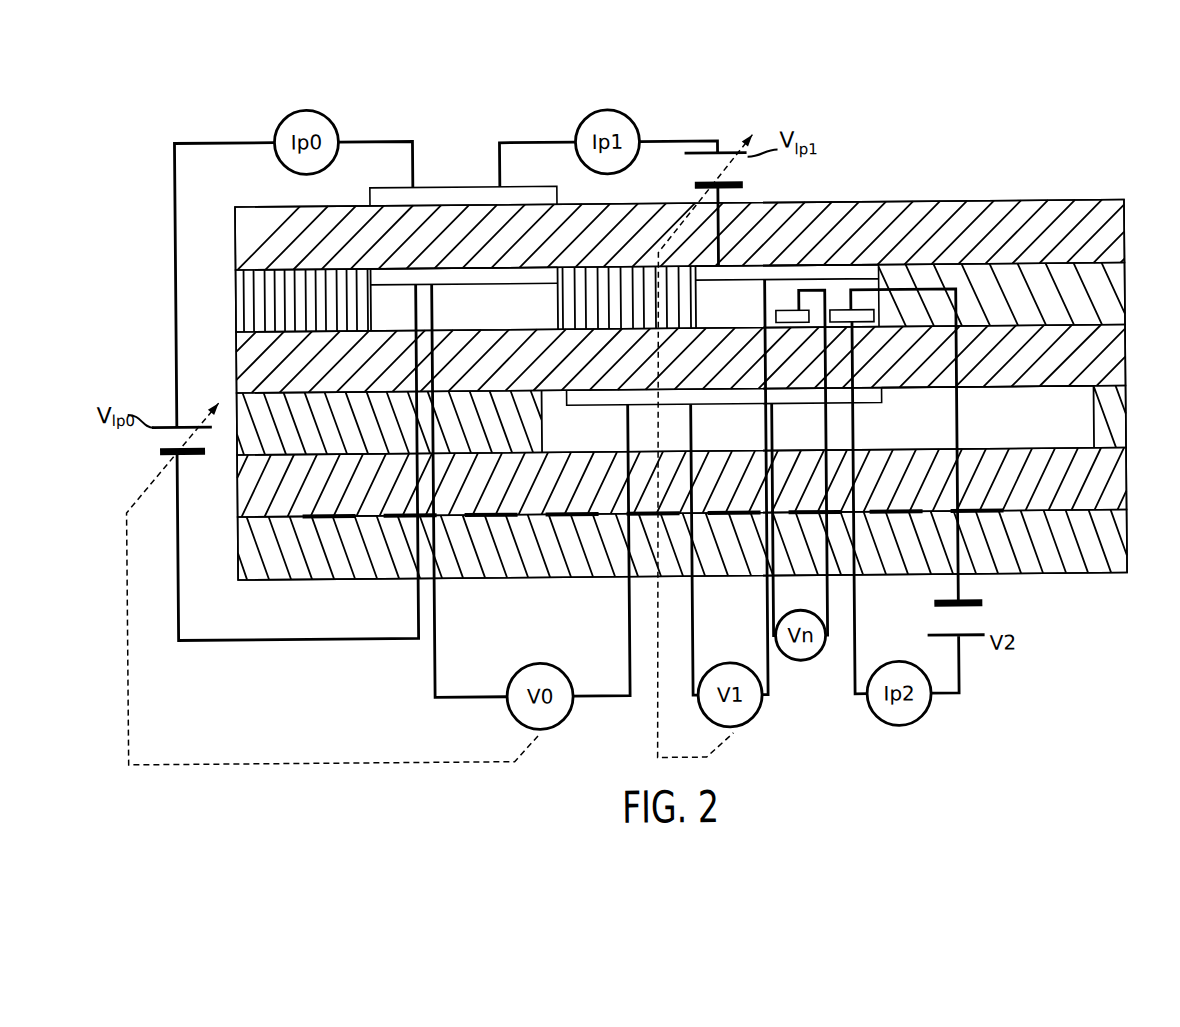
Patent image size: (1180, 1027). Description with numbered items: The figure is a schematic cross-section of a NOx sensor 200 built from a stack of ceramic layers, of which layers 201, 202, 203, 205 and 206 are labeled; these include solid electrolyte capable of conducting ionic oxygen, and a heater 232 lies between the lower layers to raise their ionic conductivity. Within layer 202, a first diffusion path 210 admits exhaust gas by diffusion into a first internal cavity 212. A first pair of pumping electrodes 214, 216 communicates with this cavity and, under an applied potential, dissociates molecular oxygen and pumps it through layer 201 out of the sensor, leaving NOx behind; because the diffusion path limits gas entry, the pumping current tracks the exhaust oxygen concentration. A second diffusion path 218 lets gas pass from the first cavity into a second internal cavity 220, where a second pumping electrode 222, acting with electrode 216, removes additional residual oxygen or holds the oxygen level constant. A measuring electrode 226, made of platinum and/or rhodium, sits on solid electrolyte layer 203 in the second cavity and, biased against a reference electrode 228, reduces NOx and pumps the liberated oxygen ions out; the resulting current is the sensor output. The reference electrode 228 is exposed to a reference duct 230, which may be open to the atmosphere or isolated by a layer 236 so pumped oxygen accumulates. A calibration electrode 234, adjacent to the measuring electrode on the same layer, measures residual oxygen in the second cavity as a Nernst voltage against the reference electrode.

The NOx sensor 200 is at (998, 87).
The ceramic layer 201 is at (1107, 234).
The ceramic layer 202 is at (1112, 296).
The solid electrolyte layer 203 is at (1108, 358).
The ceramic layer 205 is at (1115, 484).
The ceramic layer 206 is at (1115, 544).
The first diffusion path 210 is at (298, 287).
The first internal cavity 212 is at (511, 320).
The first pumping electrode 214 is at (466, 278).
The first pumping electrode 216 is at (470, 192).
The second diffusion path 218 is at (620, 270).
The second internal cavity 220 is at (745, 321).
The second pumping electrode 222 is at (832, 277).
The measuring electrode 226 is at (874, 316).
The reference electrode 228 is at (881, 408).
The reference duct 230 is at (1050, 433).
The heater 232 is at (377, 519).
The calibration electrode 234 is at (790, 306).
The layer 236 is at (1112, 417).